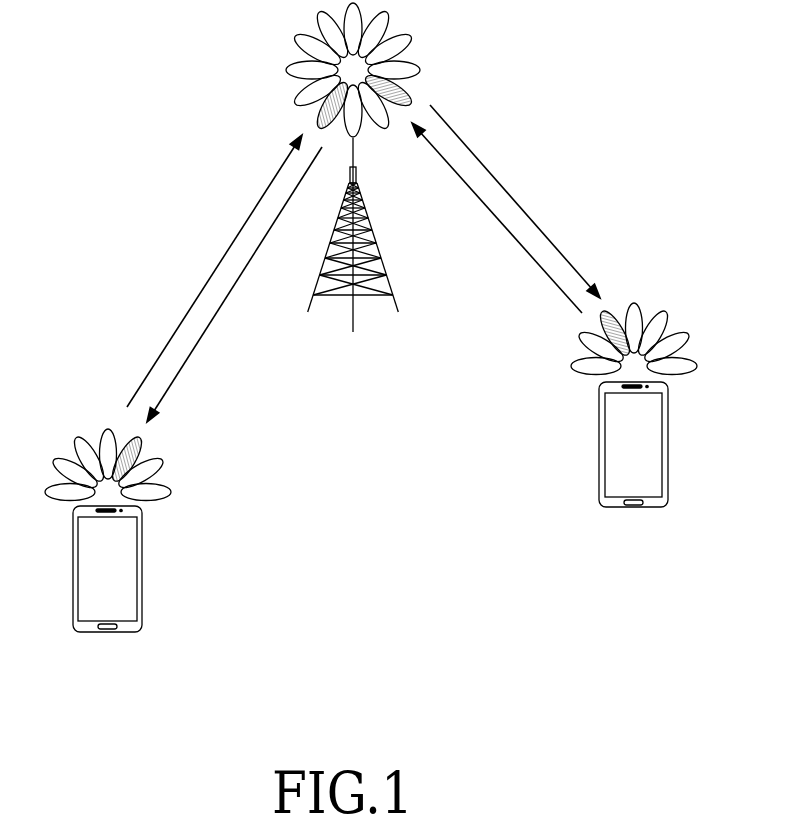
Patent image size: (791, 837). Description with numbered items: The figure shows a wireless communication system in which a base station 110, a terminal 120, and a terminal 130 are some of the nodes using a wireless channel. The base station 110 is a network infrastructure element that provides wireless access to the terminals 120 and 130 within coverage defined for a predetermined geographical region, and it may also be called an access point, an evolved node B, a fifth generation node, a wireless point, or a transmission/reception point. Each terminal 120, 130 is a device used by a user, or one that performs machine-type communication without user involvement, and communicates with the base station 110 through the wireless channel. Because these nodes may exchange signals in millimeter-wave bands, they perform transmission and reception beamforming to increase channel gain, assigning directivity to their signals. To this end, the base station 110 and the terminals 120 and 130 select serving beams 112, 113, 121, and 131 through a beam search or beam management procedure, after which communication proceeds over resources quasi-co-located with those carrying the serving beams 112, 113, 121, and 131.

The base station 110 is at (373, 232).
The serving beam 112 is at (320, 125).
The serving beam 113 is at (408, 97).
The terminal 120 is at (142, 540).
The serving beam 121 is at (141, 438).
The terminal 130 is at (668, 415).
The serving beam 131 is at (603, 330).